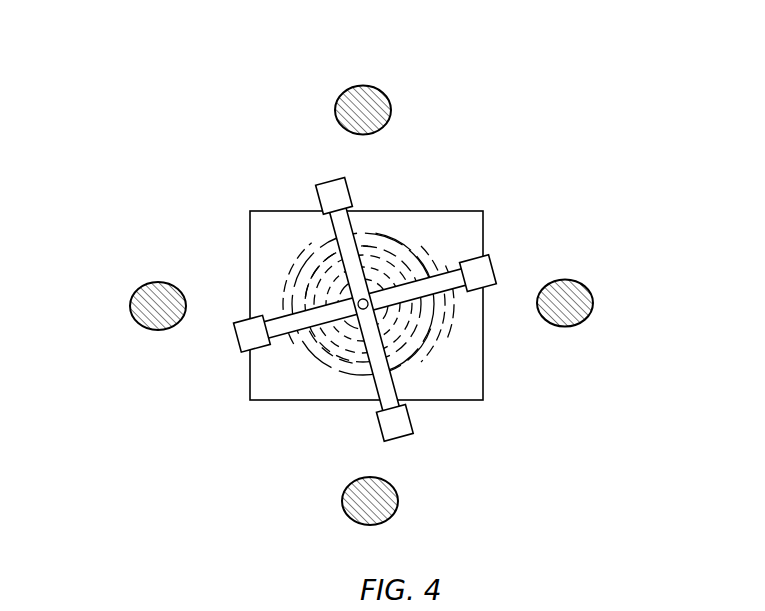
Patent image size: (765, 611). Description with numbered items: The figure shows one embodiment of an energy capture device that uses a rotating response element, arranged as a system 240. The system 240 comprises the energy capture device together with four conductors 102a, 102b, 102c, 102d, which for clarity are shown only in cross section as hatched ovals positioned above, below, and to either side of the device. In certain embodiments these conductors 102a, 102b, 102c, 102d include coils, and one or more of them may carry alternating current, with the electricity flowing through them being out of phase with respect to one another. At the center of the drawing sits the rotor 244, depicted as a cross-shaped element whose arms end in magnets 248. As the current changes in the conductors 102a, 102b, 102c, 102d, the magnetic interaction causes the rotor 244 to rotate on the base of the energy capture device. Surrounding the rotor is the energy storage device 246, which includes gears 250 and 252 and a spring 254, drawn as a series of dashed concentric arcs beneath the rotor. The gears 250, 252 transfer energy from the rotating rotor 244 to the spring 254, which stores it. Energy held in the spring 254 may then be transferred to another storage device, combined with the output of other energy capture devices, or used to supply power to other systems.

The system 240 is at (176, 186).
The rotor 244 is at (262, 316).
The energy storage device 246 is at (308, 265).
The magnets 248 is at (238, 356).
The gear 250 is at (312, 350).
The gear 252 is at (422, 256).
The spring 254 is at (421, 353).
The conductor 102a is at (130, 306).
The conductor 102b is at (335, 109).
The conductor 102c is at (593, 302).
The conductor 102d is at (398, 500).